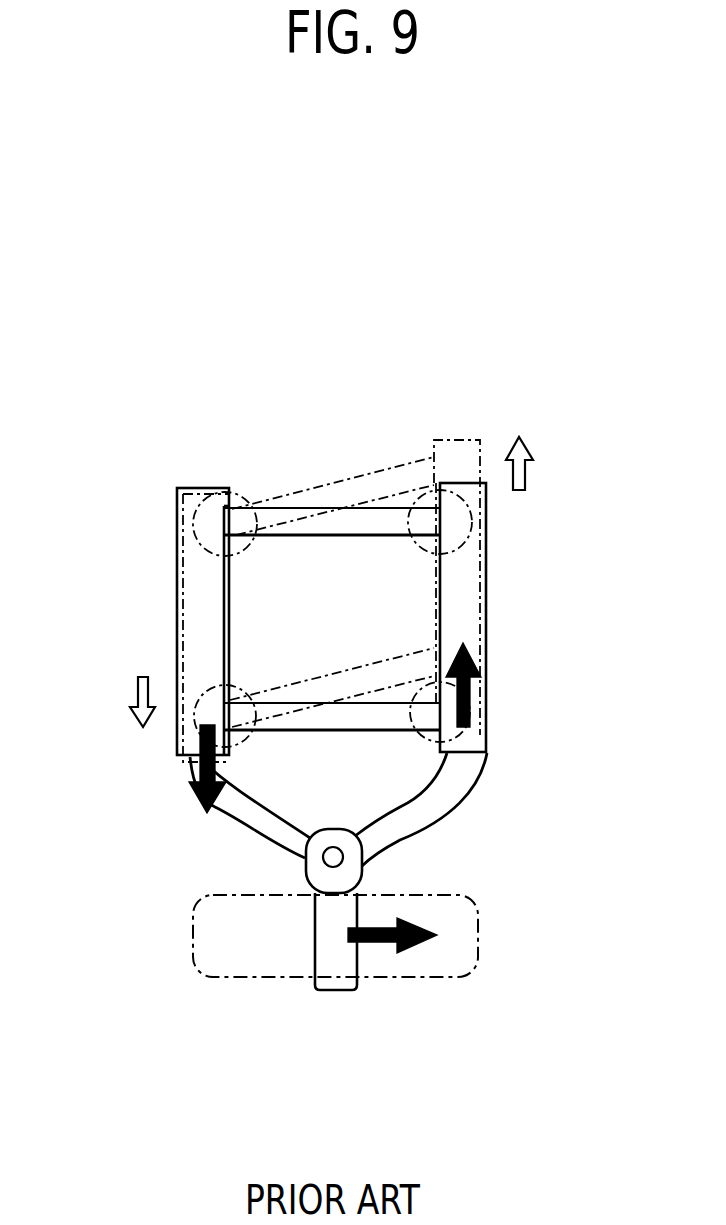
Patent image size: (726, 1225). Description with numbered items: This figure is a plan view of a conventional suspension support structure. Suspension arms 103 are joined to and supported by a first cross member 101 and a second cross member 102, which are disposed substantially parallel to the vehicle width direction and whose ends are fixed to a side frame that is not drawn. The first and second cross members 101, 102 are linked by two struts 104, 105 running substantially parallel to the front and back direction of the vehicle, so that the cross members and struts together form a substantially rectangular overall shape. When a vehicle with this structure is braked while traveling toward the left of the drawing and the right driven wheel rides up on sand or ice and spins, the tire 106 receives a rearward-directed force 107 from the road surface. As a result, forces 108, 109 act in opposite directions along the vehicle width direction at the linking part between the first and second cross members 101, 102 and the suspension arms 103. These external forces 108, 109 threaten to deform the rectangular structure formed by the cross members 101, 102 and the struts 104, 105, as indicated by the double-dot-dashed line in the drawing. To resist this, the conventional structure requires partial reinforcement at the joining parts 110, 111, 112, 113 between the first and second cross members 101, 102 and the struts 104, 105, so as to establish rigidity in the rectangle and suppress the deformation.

The first cross member 101 is at (177, 512).
The second cross member 102 is at (460, 440).
The suspension arms 103 is at (443, 818).
The strut 104 is at (363, 663).
The strut 105 is at (323, 483).
The tire 106 is at (478, 922).
The rearward-directed force 107 is at (383, 945).
The force 108 is at (195, 773).
The force 109 is at (481, 688).
The joining part 110 is at (220, 690).
The joining part 111 is at (238, 503).
The joining part 112 is at (425, 742).
The joining part 113 is at (486, 537).